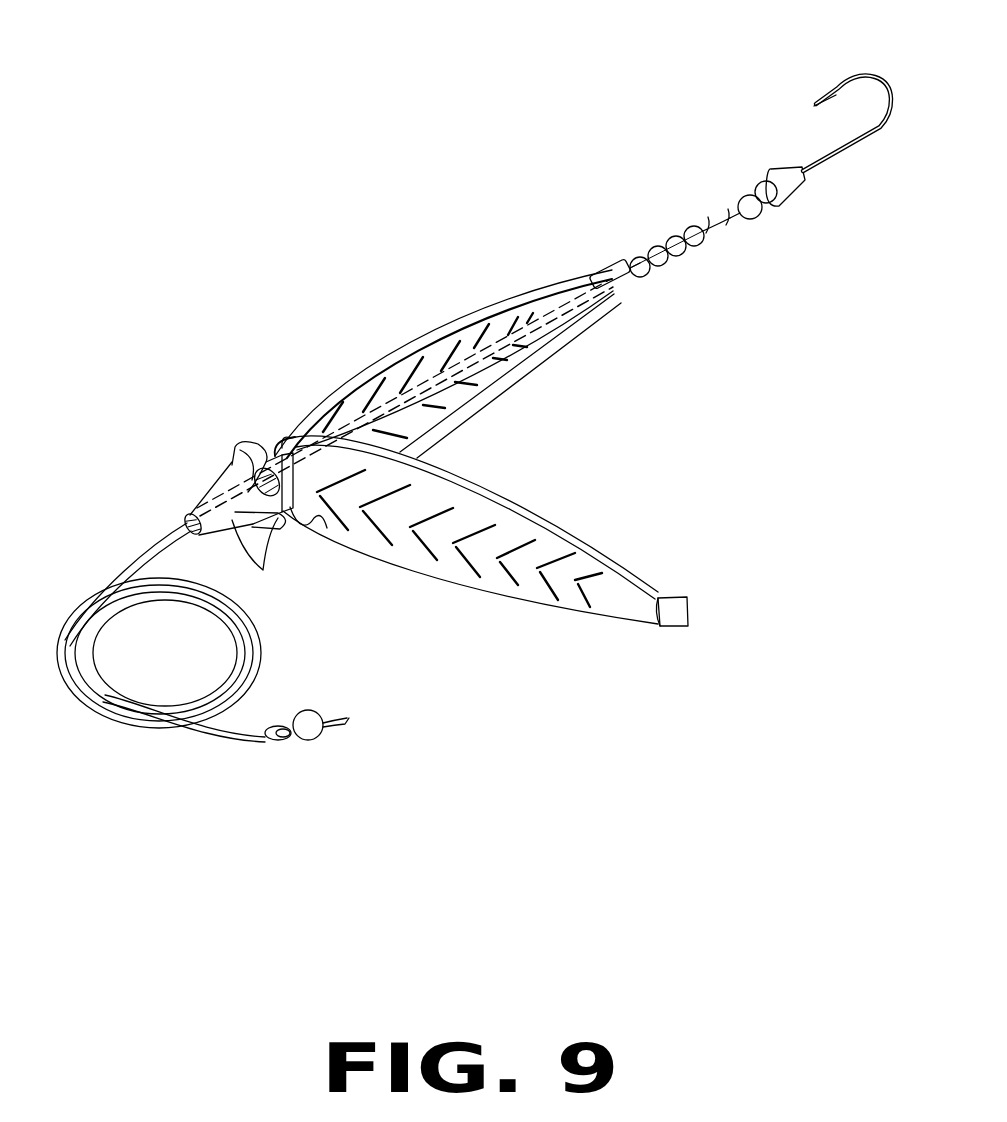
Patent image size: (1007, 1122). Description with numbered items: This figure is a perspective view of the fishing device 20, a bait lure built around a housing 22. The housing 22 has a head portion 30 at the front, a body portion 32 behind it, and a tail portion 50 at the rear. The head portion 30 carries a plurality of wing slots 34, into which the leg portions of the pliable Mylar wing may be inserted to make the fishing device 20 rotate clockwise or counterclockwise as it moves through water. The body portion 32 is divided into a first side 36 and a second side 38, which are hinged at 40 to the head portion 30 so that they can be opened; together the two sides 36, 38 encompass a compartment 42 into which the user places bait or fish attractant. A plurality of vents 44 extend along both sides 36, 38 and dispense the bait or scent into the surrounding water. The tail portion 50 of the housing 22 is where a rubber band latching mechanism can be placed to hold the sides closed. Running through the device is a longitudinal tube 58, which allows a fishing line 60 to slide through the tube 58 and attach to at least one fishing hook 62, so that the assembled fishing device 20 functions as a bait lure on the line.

The fishing device 20 is at (398, 183).
The housing 22 is at (405, 355).
The head portion 30 is at (214, 493).
The body portion 32 is at (443, 347).
The wing slots 34 is at (244, 493).
The first side 36 is at (443, 347).
The second side 38 is at (470, 554).
The hinge 40 is at (335, 563).
The compartment 42 is at (517, 376).
The vents 44 is at (470, 387).
The tail portion 50 is at (636, 410).
The longitudinal tube 58 is at (707, 257).
The fishing line 60 is at (203, 607).
The fishing hook 62 is at (839, 93).